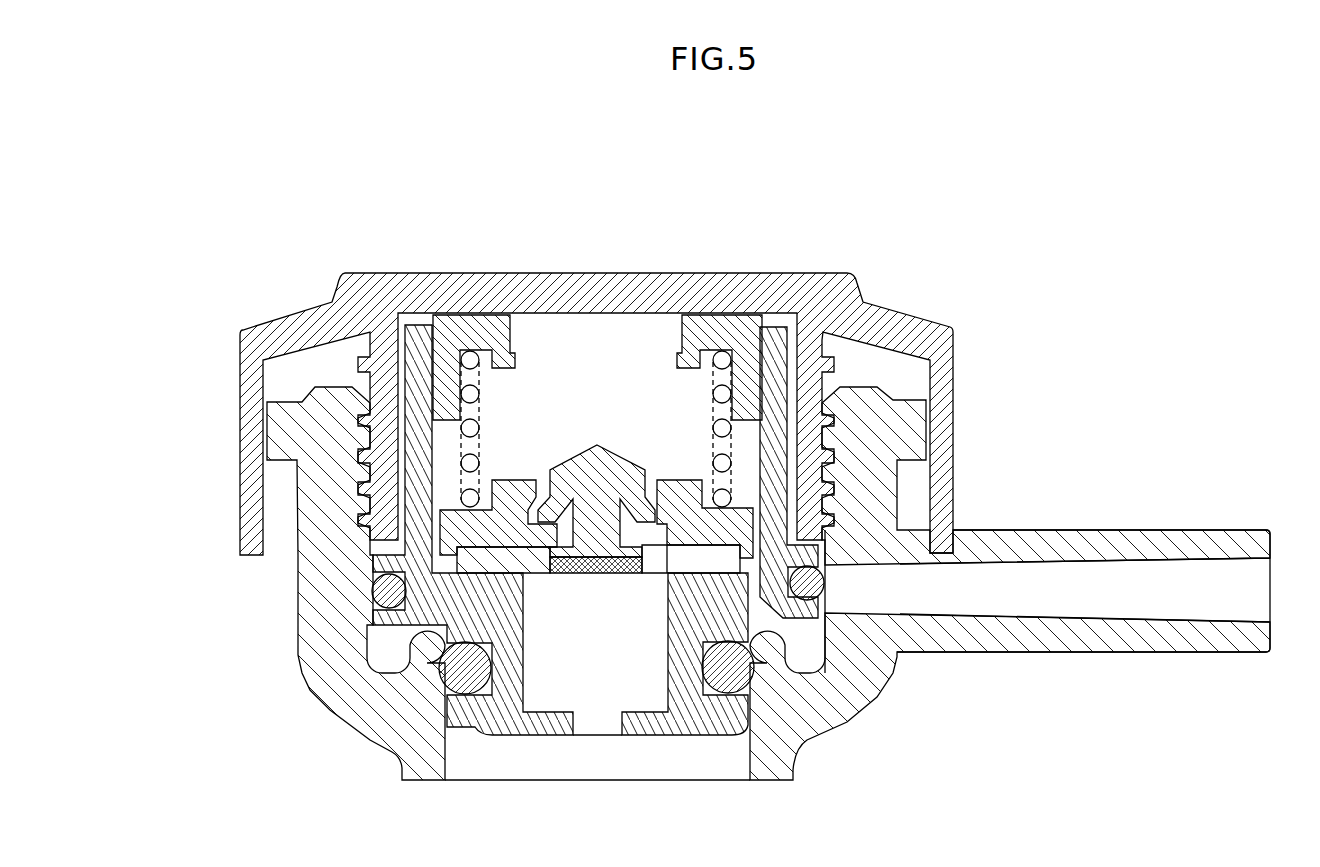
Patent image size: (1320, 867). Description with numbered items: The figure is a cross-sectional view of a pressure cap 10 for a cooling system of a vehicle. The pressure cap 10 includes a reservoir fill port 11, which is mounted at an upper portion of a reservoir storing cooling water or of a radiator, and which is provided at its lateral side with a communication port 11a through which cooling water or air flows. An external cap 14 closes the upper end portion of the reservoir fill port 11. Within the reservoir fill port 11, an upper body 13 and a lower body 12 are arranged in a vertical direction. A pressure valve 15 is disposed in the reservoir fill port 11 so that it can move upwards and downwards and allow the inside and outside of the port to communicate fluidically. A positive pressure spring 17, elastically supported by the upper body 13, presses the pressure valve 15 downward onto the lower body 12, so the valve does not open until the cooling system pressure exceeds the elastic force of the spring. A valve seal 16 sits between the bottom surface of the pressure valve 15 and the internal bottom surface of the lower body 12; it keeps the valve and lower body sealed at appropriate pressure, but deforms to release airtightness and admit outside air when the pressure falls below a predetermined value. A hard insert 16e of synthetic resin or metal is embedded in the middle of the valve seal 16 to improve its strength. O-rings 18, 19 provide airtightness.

The pressure cap 10 is at (1082, 167).
The reservoir fill port 11 is at (312, 583).
The communication port 11a is at (1083, 628).
The lower body 12 is at (438, 612).
The upper body 13 is at (470, 328).
The external cap 14 is at (742, 292).
The pressure valve 15 is at (513, 496).
The valve seal 16 is at (537, 576).
The insert 16e is at (610, 573).
The positive pressure spring 17 is at (717, 395).
The O-ring 18 is at (380, 597).
The O-ring 19 is at (458, 676).